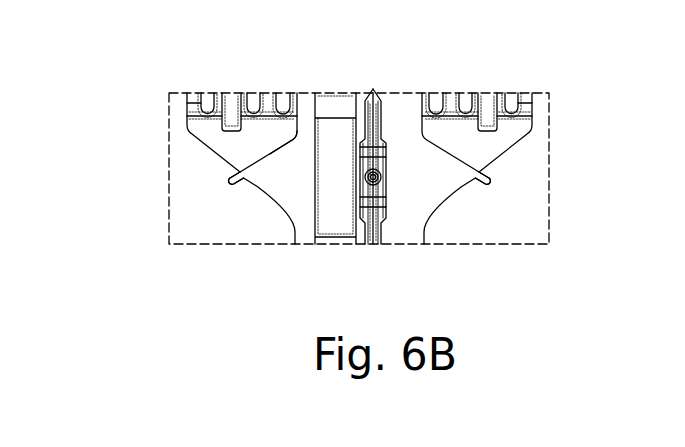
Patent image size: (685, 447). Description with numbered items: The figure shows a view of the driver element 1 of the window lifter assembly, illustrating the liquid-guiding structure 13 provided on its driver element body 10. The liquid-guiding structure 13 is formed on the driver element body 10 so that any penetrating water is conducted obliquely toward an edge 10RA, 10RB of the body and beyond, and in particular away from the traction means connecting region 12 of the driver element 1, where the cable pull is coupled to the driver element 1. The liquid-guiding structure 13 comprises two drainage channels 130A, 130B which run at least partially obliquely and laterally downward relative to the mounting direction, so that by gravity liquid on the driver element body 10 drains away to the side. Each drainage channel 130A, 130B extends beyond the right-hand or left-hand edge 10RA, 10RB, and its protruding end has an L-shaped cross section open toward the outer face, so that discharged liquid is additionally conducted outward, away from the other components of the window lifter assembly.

The driver element 1 is at (532, 74).
The driver element body 10 is at (330, 242).
The edge of the driver element body 10RA is at (199, 140).
The edge of the driver element body 10RB is at (438, 202).
The traction means connecting region 12 is at (398, 233).
The liquid-guiding structure 13 is at (281, 132).
The drainage channel 130A is at (238, 166).
The drainage channel 130B is at (468, 163).